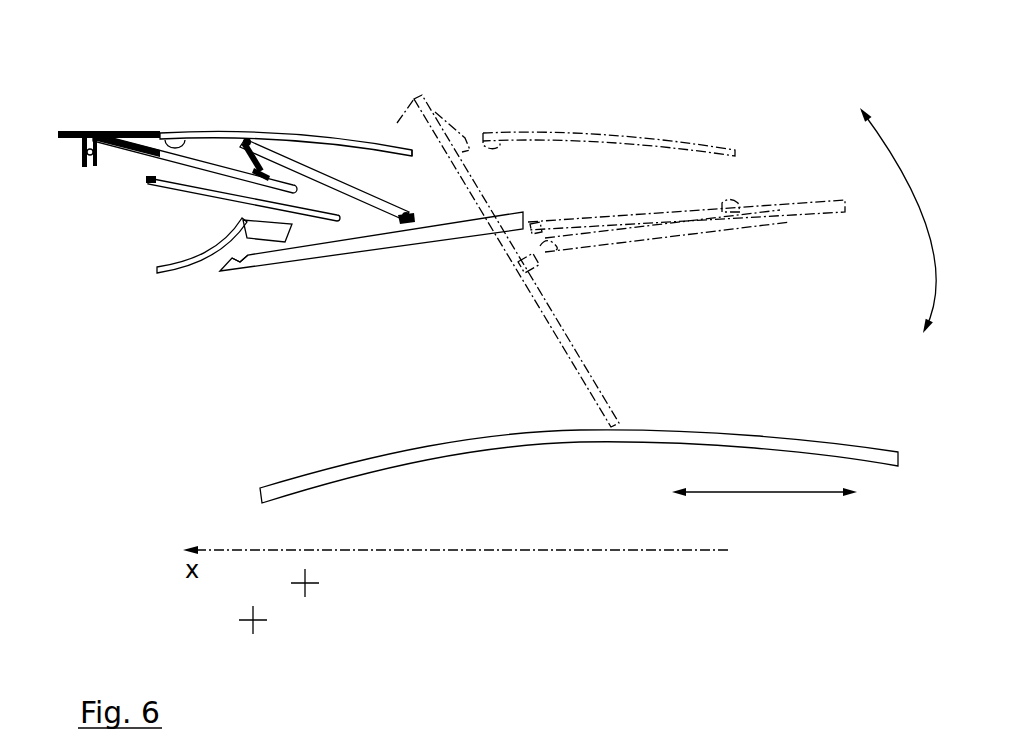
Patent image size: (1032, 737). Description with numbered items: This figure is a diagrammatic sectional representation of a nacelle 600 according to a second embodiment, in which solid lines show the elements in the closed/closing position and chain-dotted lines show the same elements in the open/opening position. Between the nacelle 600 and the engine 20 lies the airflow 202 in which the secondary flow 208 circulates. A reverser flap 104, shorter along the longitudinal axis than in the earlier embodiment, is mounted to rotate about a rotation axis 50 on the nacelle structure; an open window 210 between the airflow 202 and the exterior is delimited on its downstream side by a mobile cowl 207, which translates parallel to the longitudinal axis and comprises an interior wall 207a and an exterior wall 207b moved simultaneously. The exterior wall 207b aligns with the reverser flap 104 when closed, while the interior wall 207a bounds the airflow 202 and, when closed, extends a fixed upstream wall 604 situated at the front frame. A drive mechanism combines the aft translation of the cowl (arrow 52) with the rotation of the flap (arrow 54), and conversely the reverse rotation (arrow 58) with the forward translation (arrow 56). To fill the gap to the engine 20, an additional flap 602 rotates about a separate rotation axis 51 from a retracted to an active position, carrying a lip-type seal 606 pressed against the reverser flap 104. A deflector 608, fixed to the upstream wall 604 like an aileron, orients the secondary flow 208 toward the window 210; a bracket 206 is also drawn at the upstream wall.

The engine 20 is at (582, 431).
The rotation axis 50 is at (307, 587).
The rotation axis 51 is at (255, 622).
The arrow 52 is at (776, 519).
The arrow 54 is at (901, 328).
The arrow 56 is at (681, 517).
The arrow 58 is at (886, 219).
The reverser flap 104 is at (110, 132).
The airflow 202 is at (675, 377).
The bracket 206 is at (62, 132).
The mobile cowl 207 is at (236, 133).
The interior wall 207a is at (287, 253).
The exterior wall 207b is at (305, 137).
The secondary flow 208 is at (458, 251).
The window 210 is at (367, 138).
The nacelle 600 is at (798, 89).
The additional flap 602 is at (192, 190).
The upstream wall 604 is at (162, 272).
The seal 606 is at (330, 186).
The deflector 608 is at (280, 242).